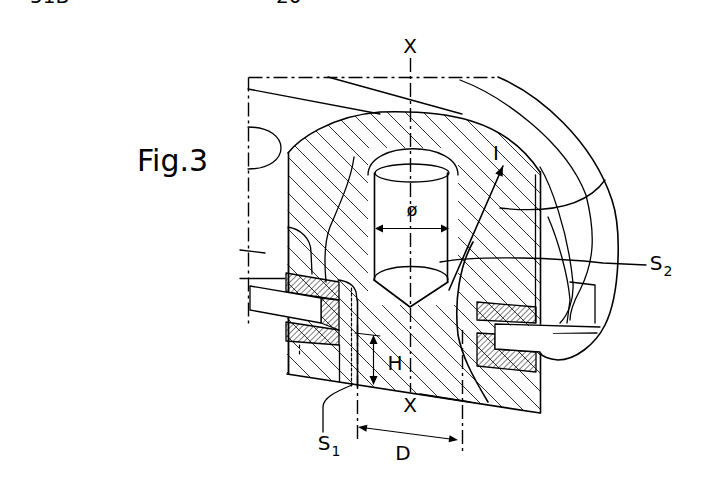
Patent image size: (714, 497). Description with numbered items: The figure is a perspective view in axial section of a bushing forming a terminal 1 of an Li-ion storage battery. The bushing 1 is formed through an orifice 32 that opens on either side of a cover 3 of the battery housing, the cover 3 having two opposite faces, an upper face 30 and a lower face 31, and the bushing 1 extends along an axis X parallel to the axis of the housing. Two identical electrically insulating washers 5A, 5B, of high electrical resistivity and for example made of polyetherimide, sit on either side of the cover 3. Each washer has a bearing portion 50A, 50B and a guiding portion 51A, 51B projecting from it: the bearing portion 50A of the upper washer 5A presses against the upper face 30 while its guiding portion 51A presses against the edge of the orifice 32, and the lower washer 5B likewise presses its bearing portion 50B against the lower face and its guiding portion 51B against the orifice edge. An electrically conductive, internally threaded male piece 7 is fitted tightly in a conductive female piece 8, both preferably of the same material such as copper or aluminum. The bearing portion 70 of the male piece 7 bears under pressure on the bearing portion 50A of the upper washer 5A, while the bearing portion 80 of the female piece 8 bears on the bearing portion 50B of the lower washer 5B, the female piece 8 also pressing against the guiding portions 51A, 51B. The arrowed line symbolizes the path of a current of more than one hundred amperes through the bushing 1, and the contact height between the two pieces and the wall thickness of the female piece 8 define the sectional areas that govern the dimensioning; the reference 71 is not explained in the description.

The bushing forming a terminal 1 is at (560, 87).
The cover 3 is at (573, 146).
The upper electrically insulating washer 5A is at (526, 323).
The lower electrically insulating washer 5B is at (527, 366).
The male piece 7 is at (605, 178).
The female piece 8 is at (519, 392).
The upper face of the cover 30 is at (240, 250).
The lower face of the cover 31 is at (272, 324).
The orifice 32 is at (486, 388).
The bearing portion of the upper washer 50A is at (284, 277).
The bearing portion of the lower washer 50B is at (288, 345).
The guiding portion of the upper washer 51A is at (354, 157).
The guiding portion of the lower washer 51B is at (314, 381).
The bearing portion of the male piece 70 is at (287, 227).
The bottom surface of cup 71 is at (440, 395).
The bearing portion of the female piece 80 is at (299, 355).